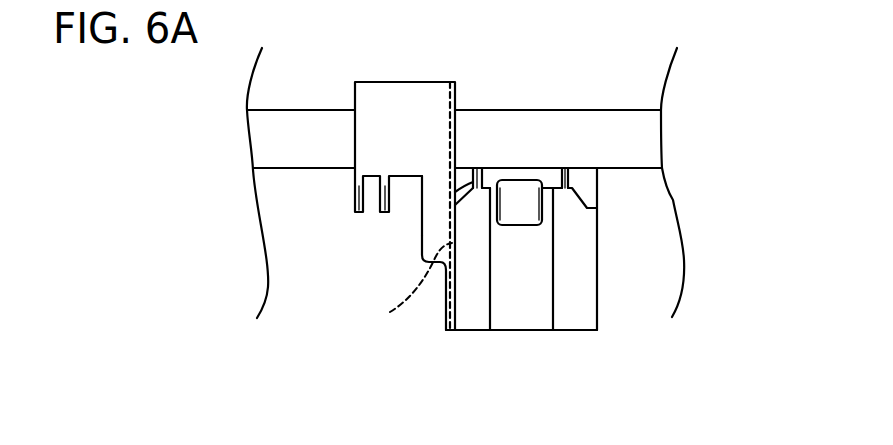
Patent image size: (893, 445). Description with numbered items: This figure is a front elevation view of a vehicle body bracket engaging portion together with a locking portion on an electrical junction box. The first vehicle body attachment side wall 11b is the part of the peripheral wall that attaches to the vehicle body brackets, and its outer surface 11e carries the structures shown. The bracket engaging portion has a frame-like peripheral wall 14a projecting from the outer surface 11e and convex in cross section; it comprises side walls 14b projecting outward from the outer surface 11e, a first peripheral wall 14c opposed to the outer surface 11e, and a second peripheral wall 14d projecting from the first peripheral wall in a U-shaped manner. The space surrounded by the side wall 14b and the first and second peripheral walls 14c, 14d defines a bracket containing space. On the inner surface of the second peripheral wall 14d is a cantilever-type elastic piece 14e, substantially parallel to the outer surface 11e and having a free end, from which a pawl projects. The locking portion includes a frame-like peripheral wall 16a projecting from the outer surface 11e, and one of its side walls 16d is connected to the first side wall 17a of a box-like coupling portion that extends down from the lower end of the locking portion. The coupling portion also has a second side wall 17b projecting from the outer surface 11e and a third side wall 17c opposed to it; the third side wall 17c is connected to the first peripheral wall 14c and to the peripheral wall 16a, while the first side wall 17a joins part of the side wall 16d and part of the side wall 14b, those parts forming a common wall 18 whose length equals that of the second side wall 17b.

The first vehicle body attachment side wall 11b is at (653, 140).
The outer surface 11e is at (645, 215).
The frame-like peripheral wall 14a is at (537, 278).
The side walls 14b is at (447, 307).
The first peripheral wall 14c is at (465, 310).
The second peripheral wall 14d is at (538, 307).
The cantilever-type elastic piece 14e is at (527, 192).
The peripheral wall 16a is at (368, 143).
The side wall 16d is at (355, 95).
The first side wall 17a is at (475, 167).
The second side wall 17b is at (422, 250).
The third side wall 17c is at (432, 222).
The common wall 18 is at (407, 287).